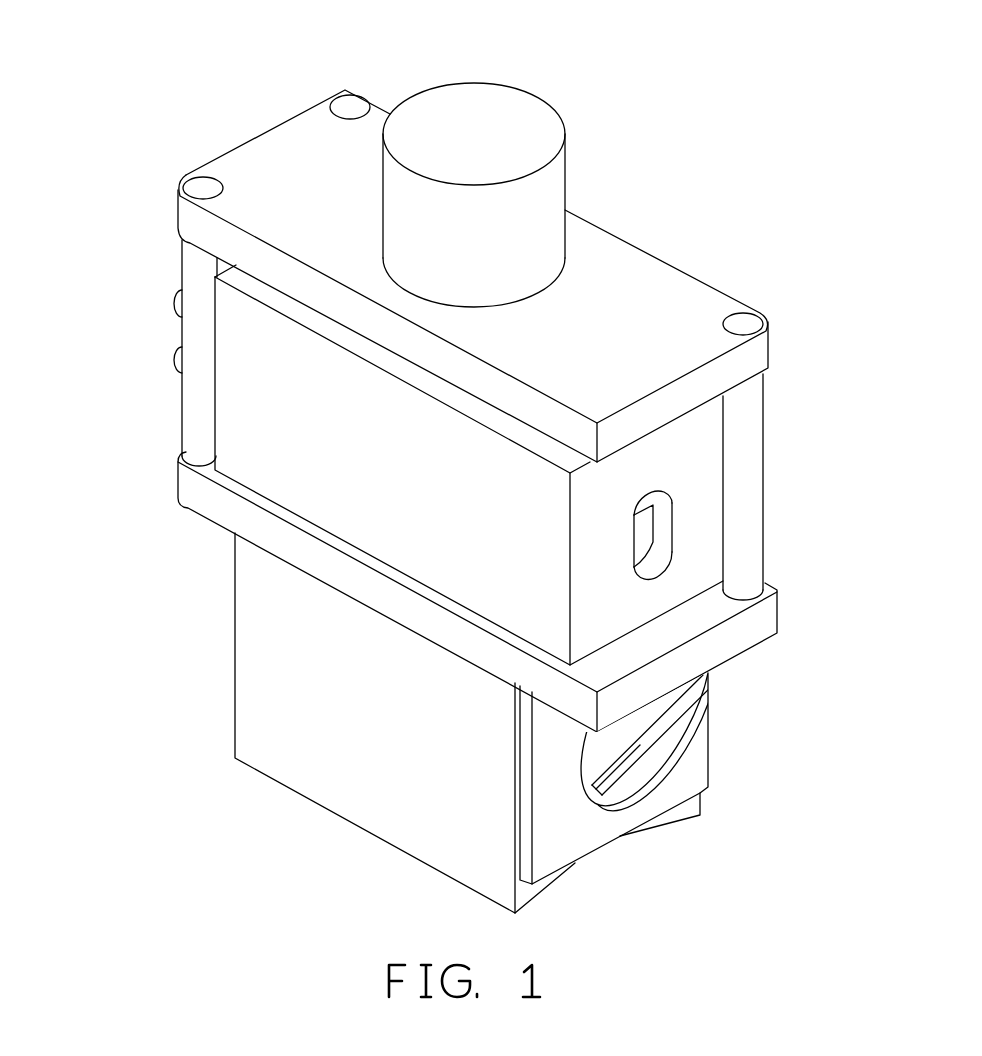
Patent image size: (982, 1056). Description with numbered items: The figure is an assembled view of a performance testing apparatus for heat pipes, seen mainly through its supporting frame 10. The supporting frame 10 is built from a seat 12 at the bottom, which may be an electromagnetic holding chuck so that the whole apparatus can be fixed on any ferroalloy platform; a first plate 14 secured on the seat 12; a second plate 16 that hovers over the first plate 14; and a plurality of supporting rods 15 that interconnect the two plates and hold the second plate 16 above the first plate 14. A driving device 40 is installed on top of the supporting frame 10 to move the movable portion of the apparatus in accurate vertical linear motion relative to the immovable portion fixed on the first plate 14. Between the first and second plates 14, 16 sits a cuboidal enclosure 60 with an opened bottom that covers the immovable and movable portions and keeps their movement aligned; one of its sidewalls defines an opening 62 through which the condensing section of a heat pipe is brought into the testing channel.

The supporting frame 10 is at (83, 203).
The seat 12 is at (265, 597).
The first plate 14 is at (200, 500).
The supporting rods 15 is at (197, 340).
The second plate 16 is at (200, 228).
The driving device 40 is at (513, 143).
The enclosure 60 is at (690, 453).
The opening 62 is at (658, 533).